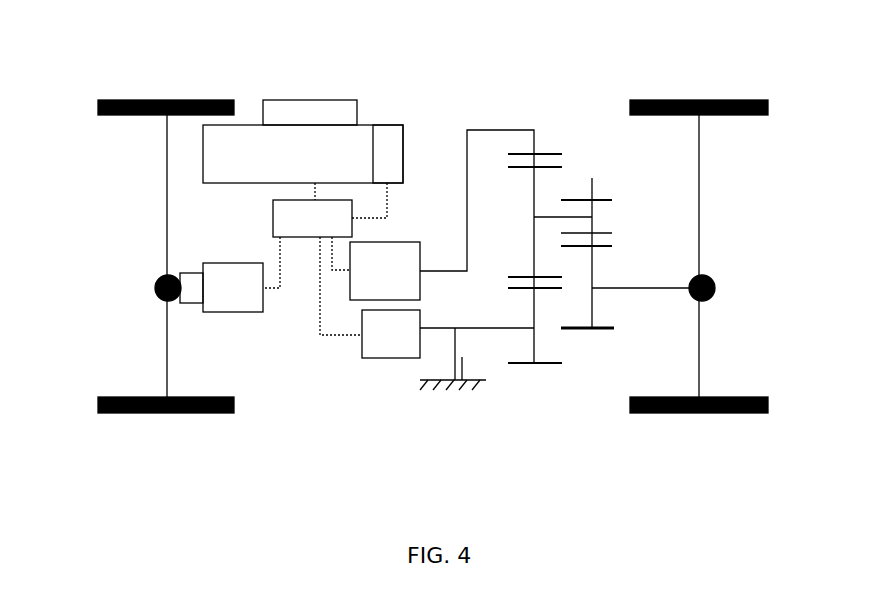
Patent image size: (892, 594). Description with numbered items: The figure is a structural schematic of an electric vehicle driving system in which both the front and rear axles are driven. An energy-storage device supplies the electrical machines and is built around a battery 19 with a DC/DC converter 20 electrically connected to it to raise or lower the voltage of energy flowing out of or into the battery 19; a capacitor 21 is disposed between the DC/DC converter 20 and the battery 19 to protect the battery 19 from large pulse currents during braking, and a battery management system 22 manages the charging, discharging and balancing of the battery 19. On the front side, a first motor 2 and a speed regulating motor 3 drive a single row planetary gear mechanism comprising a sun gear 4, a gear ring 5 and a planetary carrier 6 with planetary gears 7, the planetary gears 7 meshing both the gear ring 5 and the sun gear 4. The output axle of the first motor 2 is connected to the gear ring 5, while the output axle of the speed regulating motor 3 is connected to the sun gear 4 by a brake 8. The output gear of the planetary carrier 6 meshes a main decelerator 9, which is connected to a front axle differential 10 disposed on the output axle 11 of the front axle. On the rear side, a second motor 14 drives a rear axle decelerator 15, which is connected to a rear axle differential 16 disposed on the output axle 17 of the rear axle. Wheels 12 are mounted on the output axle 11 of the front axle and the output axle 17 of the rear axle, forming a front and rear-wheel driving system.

The first motor 2 is at (385, 271).
The speed regulating motor 3 is at (391, 334).
The sun gear 4 is at (534, 366).
The gear ring 5 is at (502, 128).
The planetary carrier 6 is at (548, 215).
The planetary gears 7 is at (592, 198).
The brake 8 is at (455, 386).
The main decelerator 9 is at (596, 270).
The front axle differential 10 is at (717, 289).
The output axle of the front axle 11 is at (703, 201).
The wheels 12 is at (166, 98).
The second motor 14 is at (233, 287).
The rear axle decelerator 15 is at (192, 306).
The rear axle differential 16 is at (154, 289).
The output axle of the rear axle 17 is at (164, 194).
The battery 19 is at (303, 162).
The DC/DC converter 20 is at (312, 267).
The capacitor 21 is at (377, 171).
The battery management system 22 is at (310, 112).